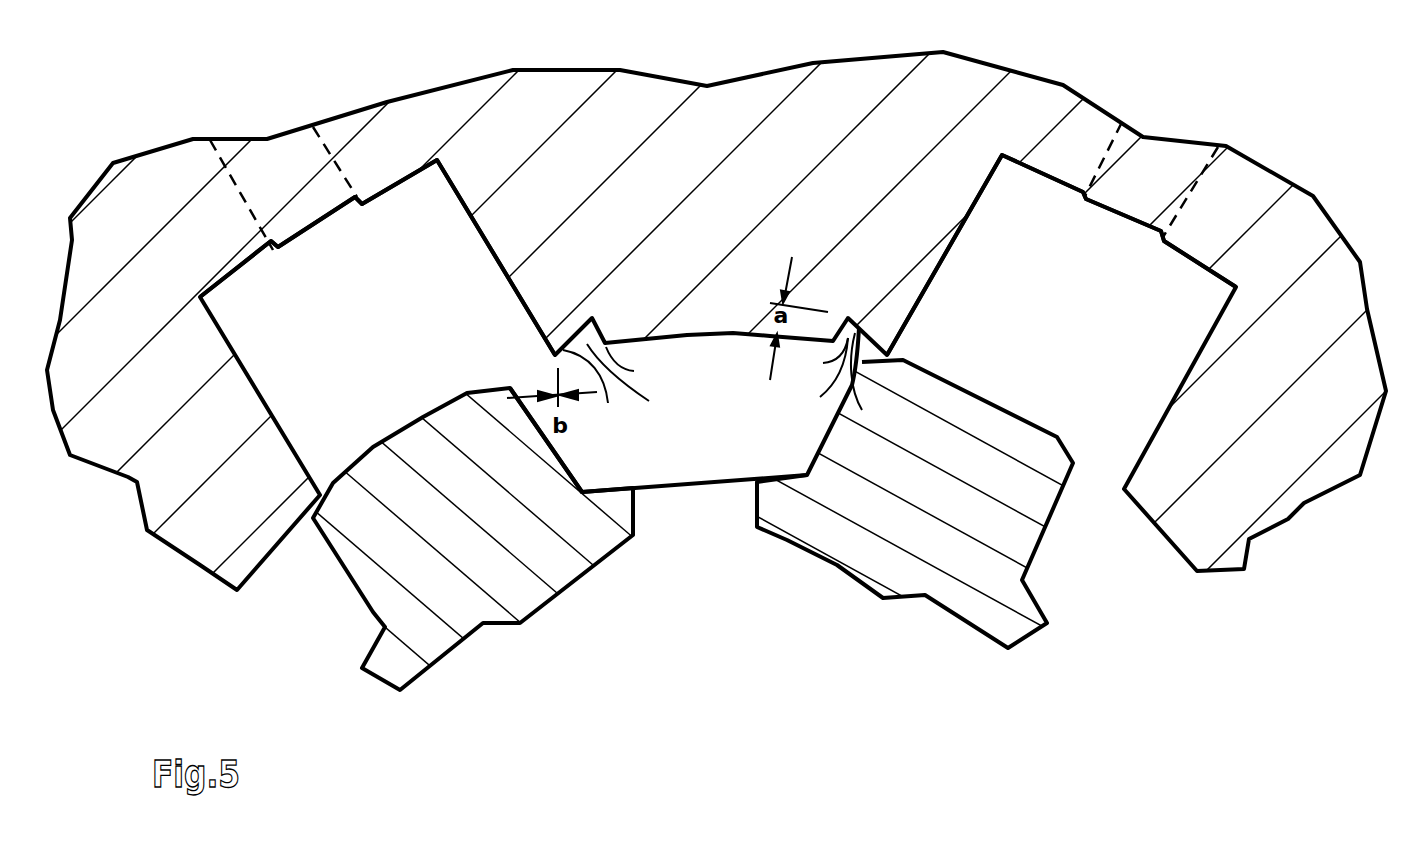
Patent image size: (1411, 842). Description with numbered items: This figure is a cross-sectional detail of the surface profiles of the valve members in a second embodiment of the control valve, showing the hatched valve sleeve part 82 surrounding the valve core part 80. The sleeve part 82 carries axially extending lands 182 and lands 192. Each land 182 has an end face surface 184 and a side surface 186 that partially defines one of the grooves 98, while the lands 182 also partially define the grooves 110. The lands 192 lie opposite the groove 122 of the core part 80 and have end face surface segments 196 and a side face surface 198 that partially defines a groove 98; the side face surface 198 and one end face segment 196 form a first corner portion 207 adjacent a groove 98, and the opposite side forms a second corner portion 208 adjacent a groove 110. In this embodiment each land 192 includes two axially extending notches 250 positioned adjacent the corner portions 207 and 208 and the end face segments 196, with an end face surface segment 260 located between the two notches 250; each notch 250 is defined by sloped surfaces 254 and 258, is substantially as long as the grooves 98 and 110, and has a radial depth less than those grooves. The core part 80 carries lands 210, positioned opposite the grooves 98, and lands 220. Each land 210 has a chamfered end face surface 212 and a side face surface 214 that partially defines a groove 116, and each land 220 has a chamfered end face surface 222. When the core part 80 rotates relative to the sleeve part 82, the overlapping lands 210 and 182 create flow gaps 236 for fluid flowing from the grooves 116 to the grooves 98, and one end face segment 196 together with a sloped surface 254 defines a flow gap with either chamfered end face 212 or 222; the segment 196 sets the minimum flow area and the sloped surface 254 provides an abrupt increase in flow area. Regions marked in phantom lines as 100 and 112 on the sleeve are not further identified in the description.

The valve sleeve part 82 is at (879, 141).
The grooves 98 is at (324, 268).
The grooves 110 is at (1058, 298).
The grooves 116 is at (293, 630).
The valve core part 80 is at (929, 491).
The groove 122 is at (665, 471).
The first pad location 100 is at (290, 167).
The second pad location 112 is at (1150, 165).
The lands 182 is at (210, 411).
The end face surface 184 is at (270, 555).
The side surface 186 is at (225, 330).
The lands 192 is at (722, 297).
The end face surface segments 196 is at (507, 203).
The side face surface 198 is at (455, 198).
The first corner portion 207 is at (560, 330).
The second corner portion 208 is at (883, 323).
The lands 210 is at (427, 457).
The end face surface 212 is at (450, 397).
The side face surface 214 is at (370, 612).
The lands 220 is at (1012, 467).
The end face surface 222 is at (1012, 407).
The flow gaps 236 is at (322, 497).
The notches 250 is at (717, 380).
The sloped surface 254 is at (733, 382).
The sloped surface 258 is at (727, 361).
The end face surface segment 260 is at (745, 343).